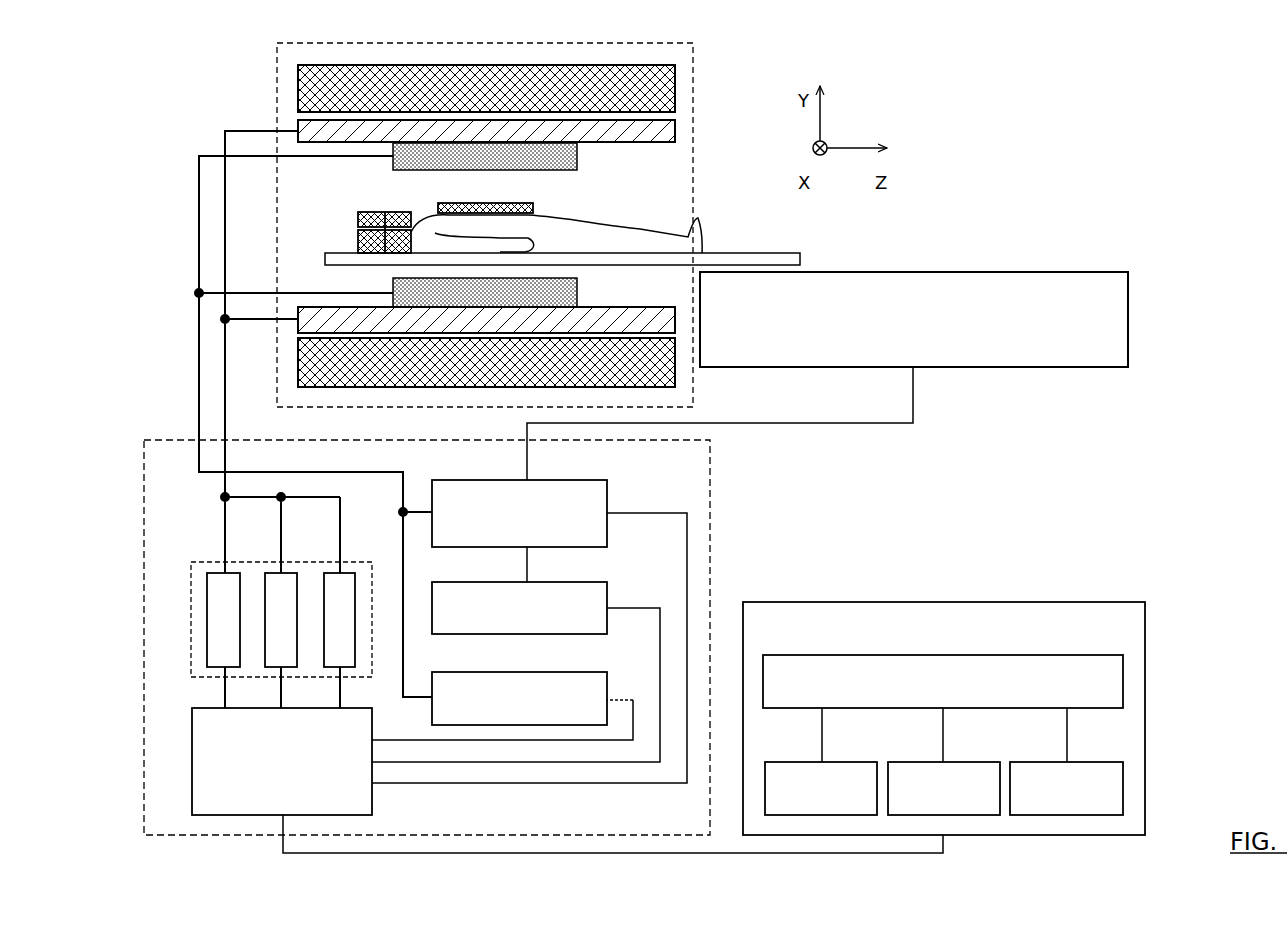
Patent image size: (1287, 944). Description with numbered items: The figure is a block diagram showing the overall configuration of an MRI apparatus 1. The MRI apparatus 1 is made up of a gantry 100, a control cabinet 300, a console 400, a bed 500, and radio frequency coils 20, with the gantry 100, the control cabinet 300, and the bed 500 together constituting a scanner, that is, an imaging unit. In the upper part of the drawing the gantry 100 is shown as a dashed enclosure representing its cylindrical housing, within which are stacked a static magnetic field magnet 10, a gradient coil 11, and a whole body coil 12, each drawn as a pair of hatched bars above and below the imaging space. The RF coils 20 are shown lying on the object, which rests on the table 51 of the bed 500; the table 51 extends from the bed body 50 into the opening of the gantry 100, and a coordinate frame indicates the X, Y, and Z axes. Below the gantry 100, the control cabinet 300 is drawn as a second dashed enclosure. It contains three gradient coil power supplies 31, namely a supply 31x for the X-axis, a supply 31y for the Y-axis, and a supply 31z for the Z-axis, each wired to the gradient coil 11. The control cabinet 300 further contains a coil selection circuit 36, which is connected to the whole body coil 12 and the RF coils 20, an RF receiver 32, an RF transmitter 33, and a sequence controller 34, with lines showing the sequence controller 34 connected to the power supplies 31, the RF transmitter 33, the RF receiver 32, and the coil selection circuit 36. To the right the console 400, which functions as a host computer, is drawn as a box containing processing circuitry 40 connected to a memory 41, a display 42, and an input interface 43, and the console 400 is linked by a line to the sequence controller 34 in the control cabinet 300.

The MRI apparatus 1 is at (960, 131).
The gantry 100 is at (697, 78).
The static magnetic field magnet 10 is at (677, 101).
The gradient coil 11 is at (677, 132).
The whole body coil 12 is at (578, 157).
The RF coils 20 is at (358, 216).
The bed body 50 is at (1028, 272).
The bed 500 is at (972, 271).
The table 51 is at (733, 253).
The control cabinet 300 is at (716, 472).
The gradient coil power supplies 31 is at (205, 562).
The gradient coil power supply for X-axis 31x is at (229, 573).
The gradient coil power supply for Y-axis 31y is at (287, 573).
The gradient coil power supply for Z-axis 31z is at (345, 573).
The RF receiver 32 is at (553, 582).
The RF transmitter 33 is at (553, 672).
The sequence controller 34 is at (205, 708).
The coil selection circuit 36 is at (553, 480).
The console 400 is at (1083, 601).
The processing circuitry 40 is at (1080, 655).
The memory 41 is at (1080, 762).
The display 42 is at (958, 762).
The input interface 43 is at (835, 762).